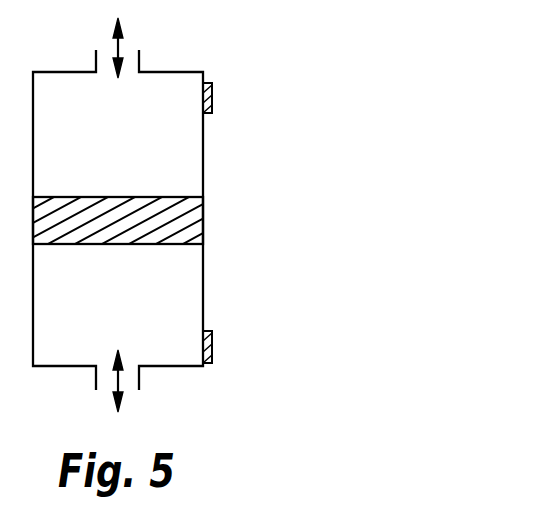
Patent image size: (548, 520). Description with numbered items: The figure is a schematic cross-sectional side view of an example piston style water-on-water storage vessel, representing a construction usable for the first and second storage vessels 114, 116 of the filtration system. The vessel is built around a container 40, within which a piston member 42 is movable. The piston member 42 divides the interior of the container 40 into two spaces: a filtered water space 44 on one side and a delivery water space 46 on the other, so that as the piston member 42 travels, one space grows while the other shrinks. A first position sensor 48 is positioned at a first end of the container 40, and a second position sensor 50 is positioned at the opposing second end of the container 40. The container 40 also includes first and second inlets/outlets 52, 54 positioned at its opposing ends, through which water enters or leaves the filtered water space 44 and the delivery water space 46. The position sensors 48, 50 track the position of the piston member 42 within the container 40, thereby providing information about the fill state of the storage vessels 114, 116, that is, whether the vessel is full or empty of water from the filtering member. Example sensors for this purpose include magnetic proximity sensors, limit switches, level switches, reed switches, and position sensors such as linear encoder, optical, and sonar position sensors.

The container 40 is at (203, 281).
The piston member 42 is at (182, 197).
The filtered water space 44 is at (130, 142).
The delivery water space 46 is at (130, 318).
The first position sensor 48 is at (212, 97).
The second position sensor 50 is at (212, 343).
The first inlet/outlet 52 is at (140, 60).
The second inlet/outlet 54 is at (132, 389).
The first storage vessel 114 is at (323, 46).
The second storage vessel 116 is at (239, 63).